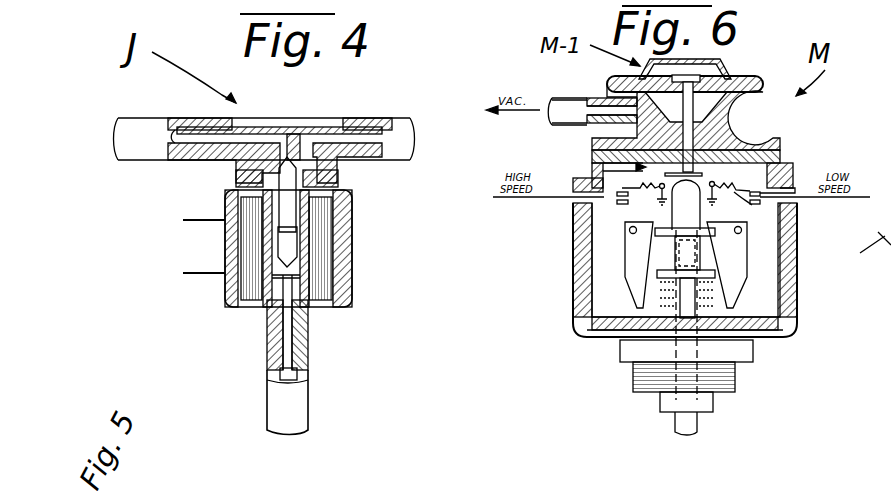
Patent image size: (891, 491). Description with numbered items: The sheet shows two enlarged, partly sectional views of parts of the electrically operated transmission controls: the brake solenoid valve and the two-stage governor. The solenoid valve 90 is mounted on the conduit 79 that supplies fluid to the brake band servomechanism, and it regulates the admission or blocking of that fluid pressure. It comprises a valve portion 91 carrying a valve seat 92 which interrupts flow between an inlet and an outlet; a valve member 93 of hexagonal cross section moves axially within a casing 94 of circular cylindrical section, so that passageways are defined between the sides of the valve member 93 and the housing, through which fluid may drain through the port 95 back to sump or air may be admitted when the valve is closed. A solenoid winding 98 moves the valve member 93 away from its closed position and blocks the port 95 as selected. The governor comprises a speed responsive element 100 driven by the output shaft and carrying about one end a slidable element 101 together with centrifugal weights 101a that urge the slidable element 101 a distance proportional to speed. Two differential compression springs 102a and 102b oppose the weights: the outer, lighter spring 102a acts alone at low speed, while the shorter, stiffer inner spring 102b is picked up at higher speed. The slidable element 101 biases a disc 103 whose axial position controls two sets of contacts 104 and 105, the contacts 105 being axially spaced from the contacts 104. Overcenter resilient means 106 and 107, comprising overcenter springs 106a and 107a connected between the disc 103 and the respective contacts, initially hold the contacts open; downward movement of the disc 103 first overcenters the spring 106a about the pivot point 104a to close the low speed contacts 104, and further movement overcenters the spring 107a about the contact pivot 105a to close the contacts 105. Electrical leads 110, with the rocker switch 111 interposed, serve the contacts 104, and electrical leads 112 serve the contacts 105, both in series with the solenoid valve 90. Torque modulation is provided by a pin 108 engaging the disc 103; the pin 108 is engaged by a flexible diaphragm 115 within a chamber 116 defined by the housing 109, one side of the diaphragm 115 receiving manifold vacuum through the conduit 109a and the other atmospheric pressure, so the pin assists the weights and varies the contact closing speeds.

In FIG. 4, the conduit 79 is at (400, 150).
In FIG. 4, the solenoid valve 90 is at (325, 117).
In FIG. 4, the valve portion 91 is at (289, 118).
In FIG. 4, the valve seat 92 is at (300, 168).
In FIG. 4, the valve member 93 is at (290, 208).
In FIG. 4, the casing 94 is at (248, 240).
In FIG. 4, the port 95 is at (288, 282).
In FIG. 4, the solenoid winding 98 is at (255, 212).
In FIG. 6, the speed responsive element 100 is at (672, 422).
In FIG. 6, the slidable element 101 is at (638, 245).
In FIG. 6, the centrifugal weights 101a is at (650, 265).
In FIG. 6, the spring 102a is at (660, 305).
In FIG. 6, the spring 102b is at (700, 302).
In FIG. 6, the disc 103 is at (735, 135).
In FIG. 6, the contacts 104 is at (796, 172).
In FIG. 6, the pivot point 104a is at (752, 209).
In FIG. 6, the contacts 105 is at (580, 210).
In FIG. 6, the contact pivot 105a is at (648, 186).
In FIG. 6, the overcenter resilient means 106 is at (782, 157).
In FIG. 6, the overcenter spring 106a is at (760, 192).
In FIG. 6, the overcenter resilient means 107 is at (592, 168).
In FIG. 6, the overcenter spring 107a is at (640, 140).
In FIG. 6, the pin 108 is at (708, 88).
In FIG. 6, the housing 109 is at (622, 76).
In FIG. 6, the conduit 109a is at (550, 112).
In FIG. 6, the electrical leads 110 is at (880, 252).
In FIG. 6, the rocker switch 111 is at (890, 290).
In FIG. 6, the electrical leads 112 is at (494, 200).
In FIG. 6, the flexible diaphragm 115 is at (726, 72).
In FIG. 6, the chamber 116 is at (616, 90).